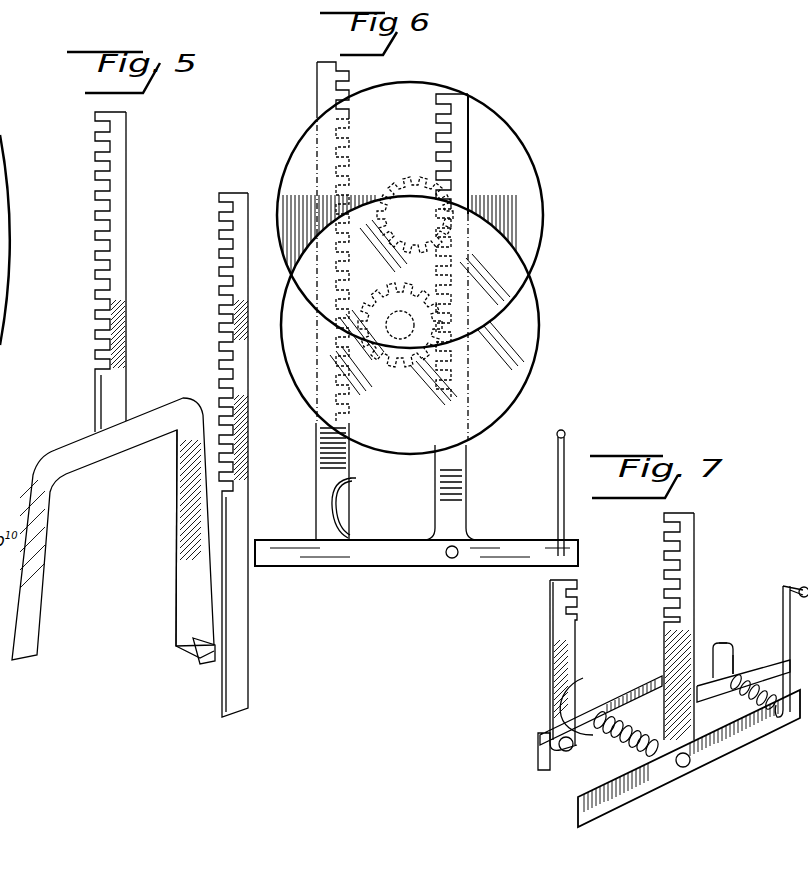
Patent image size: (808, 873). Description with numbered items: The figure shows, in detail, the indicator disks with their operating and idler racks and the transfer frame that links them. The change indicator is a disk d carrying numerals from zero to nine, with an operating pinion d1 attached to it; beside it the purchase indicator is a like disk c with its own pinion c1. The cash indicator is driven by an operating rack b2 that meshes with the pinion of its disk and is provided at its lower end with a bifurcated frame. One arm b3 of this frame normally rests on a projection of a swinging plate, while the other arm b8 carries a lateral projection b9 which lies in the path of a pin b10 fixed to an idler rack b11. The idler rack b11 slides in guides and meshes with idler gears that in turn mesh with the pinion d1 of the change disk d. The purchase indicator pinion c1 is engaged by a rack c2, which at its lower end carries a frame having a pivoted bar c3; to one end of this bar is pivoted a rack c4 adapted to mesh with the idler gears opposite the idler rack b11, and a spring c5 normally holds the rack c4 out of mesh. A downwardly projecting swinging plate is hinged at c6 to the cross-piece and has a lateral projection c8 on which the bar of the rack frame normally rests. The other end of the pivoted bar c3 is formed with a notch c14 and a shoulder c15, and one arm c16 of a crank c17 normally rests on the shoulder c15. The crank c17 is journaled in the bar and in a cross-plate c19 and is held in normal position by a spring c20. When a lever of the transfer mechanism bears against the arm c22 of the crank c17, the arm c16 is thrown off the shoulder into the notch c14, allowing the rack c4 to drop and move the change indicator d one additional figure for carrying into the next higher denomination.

In FIG. 5, the change indicator disk d is at (4, 296).
In FIG. 6, the change indicator disk d is at (527, 184).
In FIG. 6, the pinion of change indicator disk d1 is at (402, 182).
In FIG. 5, the operating rack for cash indicator b2 is at (127, 255).
In FIG. 5, the arm of bifurcated frame b3 is at (36, 564).
In FIG. 5, the other arm of bifurcated frame b8 is at (190, 523).
In FIG. 5, the lateral projection b9 is at (186, 651).
In FIG. 5, the pin b10 is at (203, 662).
In FIG. 5, the idler rack b11 is at (240, 592).
In FIG. 6, the purchase indicator disk c is at (531, 339).
In FIG. 6, the pinion of purchase indicator disk c1 is at (520, 352).
In FIG. 7, the pinion of purchase indicator disk c1 is at (765, 729).
In FIG. 6, the operating rack for purchase indicator c2 is at (466, 463).
In FIG. 7, the operating rack for purchase indicator c2 is at (690, 625).
In FIG. 7, the pivoted bar c3 is at (655, 684).
In FIG. 6, the pivoted rack c4 is at (322, 480).
In FIG. 7, the pivoted rack c4 is at (550, 663).
In FIG. 6, the spring c5 is at (337, 516).
In FIG. 7, the spring c5 is at (566, 712).
In FIG. 6, the hinge c6 is at (416, 553).
In FIG. 7, the lateral projection of swinging plate c8 is at (630, 746).
In FIG. 7, the notch c14 is at (712, 650).
In FIG. 7, the shoulder c15 is at (722, 641).
In FIG. 7, the crank arm c16 is at (728, 660).
In FIG. 6, the crank c17 is at (558, 463).
In FIG. 7, the crank c17 is at (785, 590).
In FIG. 7, the cross-plate c19 is at (730, 703).
In FIG. 7, the spring of crank c20 is at (752, 688).
In FIG. 6, the arm of crank c22 is at (566, 432).
In FIG. 7, the arm of crank c22 is at (805, 586).